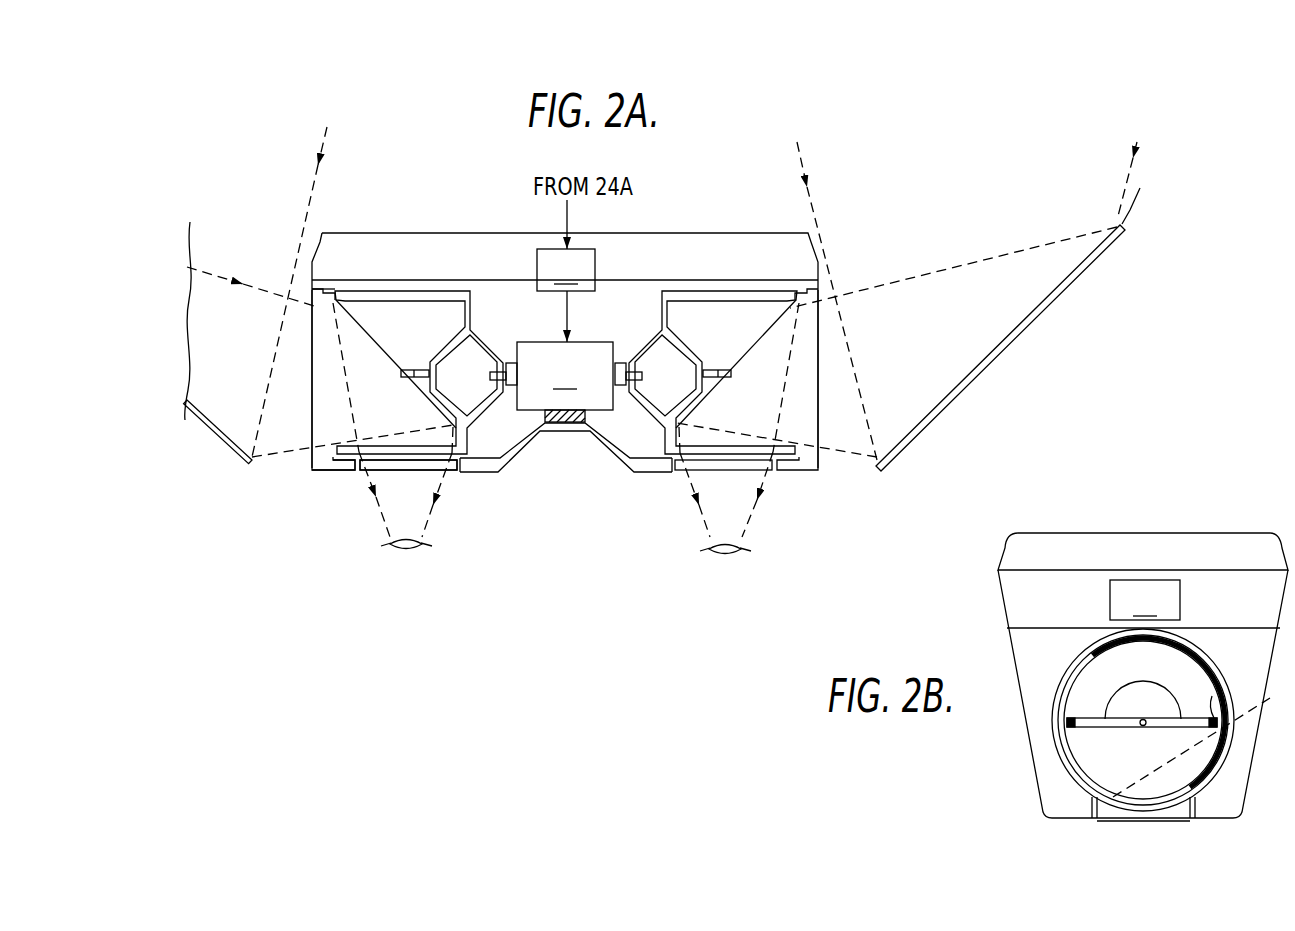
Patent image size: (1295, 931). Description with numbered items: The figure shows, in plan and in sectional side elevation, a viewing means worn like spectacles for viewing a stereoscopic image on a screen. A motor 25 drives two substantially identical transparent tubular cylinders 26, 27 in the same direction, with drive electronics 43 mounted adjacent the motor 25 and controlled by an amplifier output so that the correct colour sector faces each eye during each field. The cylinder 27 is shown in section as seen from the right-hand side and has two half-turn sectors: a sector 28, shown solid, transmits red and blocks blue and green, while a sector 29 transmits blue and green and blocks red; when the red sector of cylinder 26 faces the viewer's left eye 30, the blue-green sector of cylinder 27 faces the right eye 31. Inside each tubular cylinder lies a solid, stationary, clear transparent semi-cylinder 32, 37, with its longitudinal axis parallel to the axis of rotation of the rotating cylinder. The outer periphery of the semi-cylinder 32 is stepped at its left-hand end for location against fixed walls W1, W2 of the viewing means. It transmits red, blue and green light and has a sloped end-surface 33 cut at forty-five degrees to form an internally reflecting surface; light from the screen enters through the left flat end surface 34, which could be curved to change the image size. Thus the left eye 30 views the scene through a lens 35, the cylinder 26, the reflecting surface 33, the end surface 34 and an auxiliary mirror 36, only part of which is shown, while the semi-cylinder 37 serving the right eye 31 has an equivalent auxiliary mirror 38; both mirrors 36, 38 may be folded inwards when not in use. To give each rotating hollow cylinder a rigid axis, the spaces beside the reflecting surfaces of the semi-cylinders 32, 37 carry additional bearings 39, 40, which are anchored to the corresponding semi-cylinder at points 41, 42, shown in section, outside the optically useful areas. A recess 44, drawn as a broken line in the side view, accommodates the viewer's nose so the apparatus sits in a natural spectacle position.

In FIG. 2A, the motor 25 is at (566, 376).
In FIG. 2B, the motor 25 is at (1122, 694).
In FIG. 2A, the transparent tubular cylinder 26 is at (417, 302).
In FIG. 2A, the transparent tubular cylinder 27 is at (725, 303).
In FIG. 2B, the sector 28 is at (1198, 666).
In FIG. 2B, the sector 29 is at (1070, 681).
In FIG. 2A, the left eye 30 is at (408, 550).
In FIG. 2A, the right eye 31 is at (717, 550).
In FIG. 2A, the transparent semi-cylinder 32 is at (325, 417).
In FIG. 2A, the sloped end-surface 33 is at (380, 347).
In FIG. 2A, the end surface 34 is at (313, 398).
In FIG. 2A, the lens 35 is at (446, 468).
In FIG. 2B, the lens 35 is at (1115, 812).
In FIG. 2A, the auxiliary mirror 36 is at (222, 442).
In FIG. 2A, the transparent semi-cylinder 37 is at (805, 422).
In FIG. 2A, the auxiliary mirror 38 is at (978, 371).
In FIG. 2A, the bearing 39 is at (417, 370).
In FIG. 2A, the bearing 40 is at (722, 370).
In FIG. 2B, the anchoring point 41 is at (1068, 728).
In FIG. 2B, the anchoring point 42 is at (1220, 702).
In FIG. 2A, the drive electronics 43 is at (566, 295).
In FIG. 2B, the drive electronics 43 is at (1145, 600).
In FIG. 2A, the recess 44 is at (597, 450).
In FIG. 2B, the recess 44 is at (1187, 741).
In FIG. 2A, the fixed wall W1 is at (340, 282).
In FIG. 2A, the fixed wall W2 is at (333, 465).